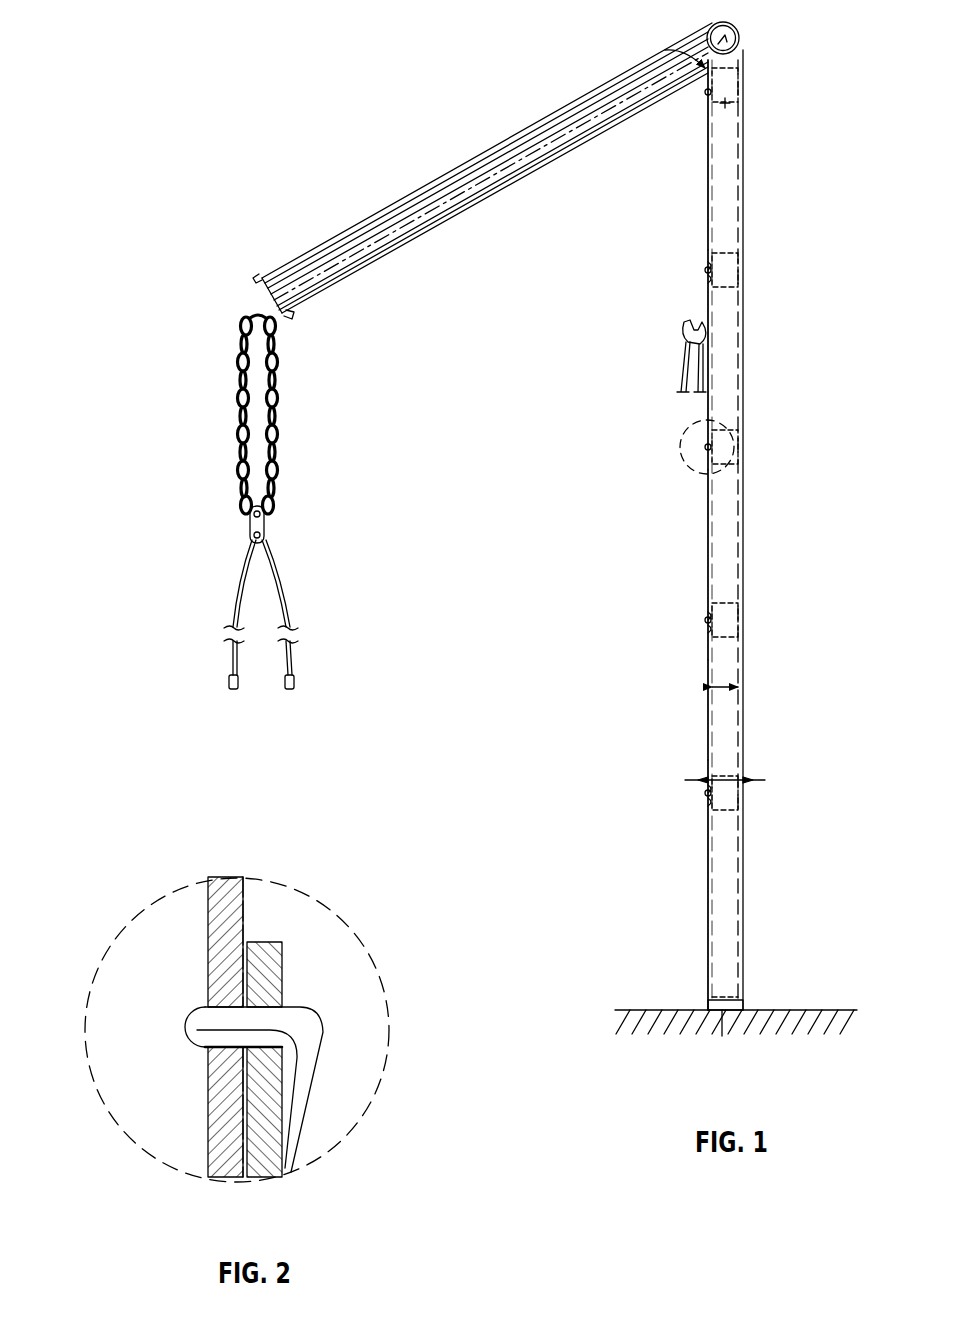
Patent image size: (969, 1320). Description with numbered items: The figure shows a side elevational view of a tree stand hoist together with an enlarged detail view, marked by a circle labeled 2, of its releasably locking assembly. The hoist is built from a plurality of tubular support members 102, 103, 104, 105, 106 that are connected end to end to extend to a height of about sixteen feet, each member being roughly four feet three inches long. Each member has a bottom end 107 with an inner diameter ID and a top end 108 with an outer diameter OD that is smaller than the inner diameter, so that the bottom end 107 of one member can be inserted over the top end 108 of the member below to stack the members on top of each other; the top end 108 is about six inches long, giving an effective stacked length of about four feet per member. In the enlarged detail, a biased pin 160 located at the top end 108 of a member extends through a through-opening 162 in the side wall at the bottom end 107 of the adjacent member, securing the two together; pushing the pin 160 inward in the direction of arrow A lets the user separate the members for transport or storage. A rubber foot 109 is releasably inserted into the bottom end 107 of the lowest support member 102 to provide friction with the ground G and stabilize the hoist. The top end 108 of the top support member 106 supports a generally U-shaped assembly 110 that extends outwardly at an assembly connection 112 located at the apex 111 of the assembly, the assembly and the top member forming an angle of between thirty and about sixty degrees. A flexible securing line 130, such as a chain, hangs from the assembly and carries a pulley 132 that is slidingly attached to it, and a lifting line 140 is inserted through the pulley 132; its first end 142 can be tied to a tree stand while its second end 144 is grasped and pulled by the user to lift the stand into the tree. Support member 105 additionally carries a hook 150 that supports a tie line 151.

In FIG. 1, the support member 102 is at (708, 893).
In FIG. 1, the support member 103 is at (708, 672).
In FIG. 1, the support member 104 is at (708, 528).
In FIG. 2, the support member 104 is at (272, 1150).
In FIG. 1, the support member 105 is at (708, 400).
In FIG. 2, the support member 105 is at (208, 965).
In FIG. 1, the top support member 106 is at (708, 165).
In FIG. 1, the bottom end 107 is at (724, 1014).
In FIG. 1, the top end 108 is at (740, 778).
In FIG. 2, the top end 108 is at (282, 992).
In FIG. 1, the rubber foot 109 is at (708, 1006).
In FIG. 1, the U-shaped assembly 110 is at (481, 156).
In FIG. 1, the apex 111 is at (740, 30).
In FIG. 1, the assembly connection 112 is at (743, 70).
In FIG. 1, the securing line 130 is at (277, 400).
In FIG. 1, the pulley 132 is at (268, 538).
In FIG. 1, the lifting line 140 is at (293, 620).
In FIG. 1, the first end 142 is at (297, 680).
In FIG. 1, the second end 144 is at (240, 688).
In FIG. 1, the hook 150 is at (682, 325).
In FIG. 1, the tie line 151 is at (683, 374).
In FIG. 1, the biased pin 160 is at (708, 95).
In FIG. 2, the biased pin 160 is at (196, 1010).
In FIG. 2, the through-opening 162 is at (200, 1048).
In FIG. 1, the detail view circle 2 is at (678, 452).
In FIG. 2, the arrow A is at (167, 1031).
In FIG. 1, the ground G is at (598, 1022).
In FIG. 1, the inner diameter ID is at (728, 686).
In FIG. 1, the outer diameter OD is at (700, 779).